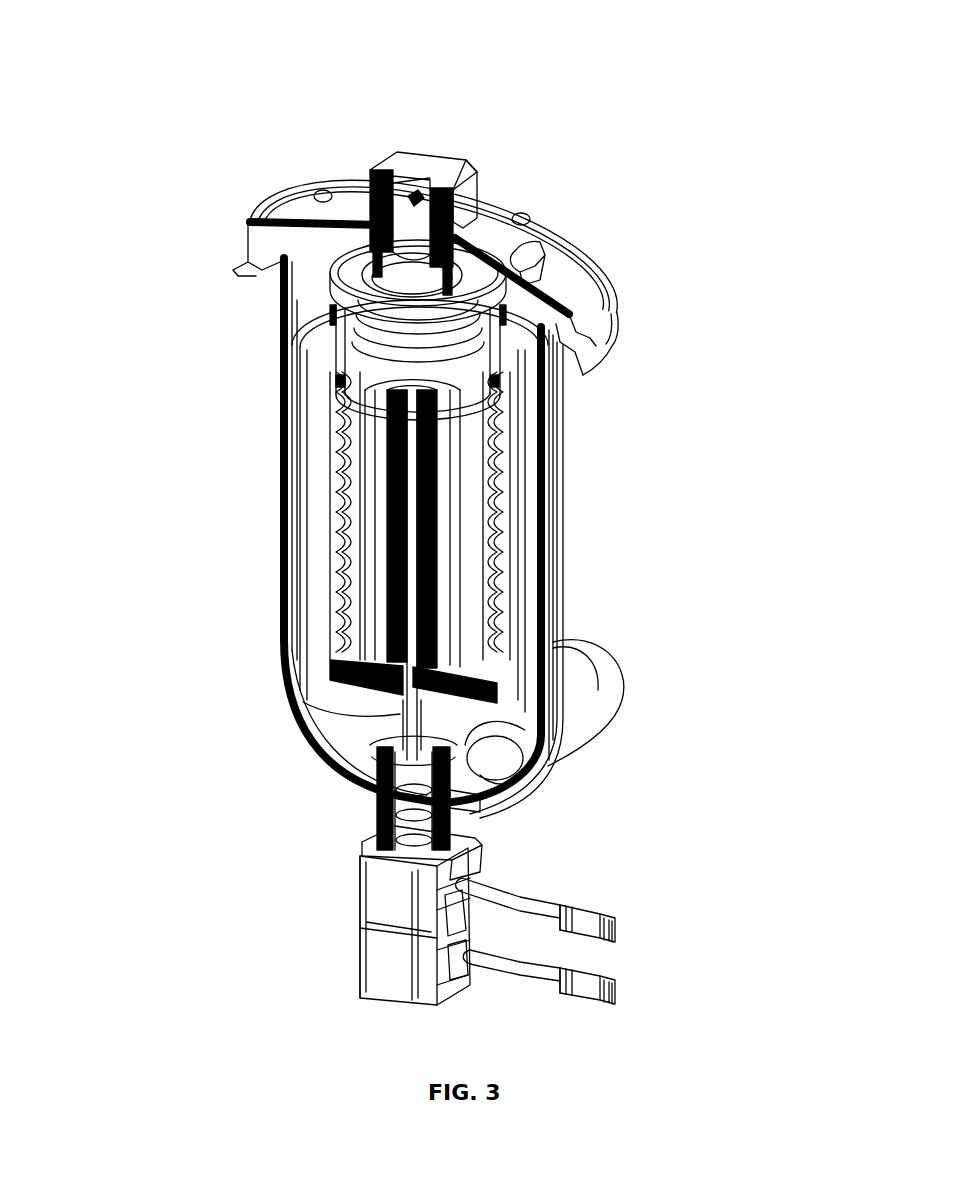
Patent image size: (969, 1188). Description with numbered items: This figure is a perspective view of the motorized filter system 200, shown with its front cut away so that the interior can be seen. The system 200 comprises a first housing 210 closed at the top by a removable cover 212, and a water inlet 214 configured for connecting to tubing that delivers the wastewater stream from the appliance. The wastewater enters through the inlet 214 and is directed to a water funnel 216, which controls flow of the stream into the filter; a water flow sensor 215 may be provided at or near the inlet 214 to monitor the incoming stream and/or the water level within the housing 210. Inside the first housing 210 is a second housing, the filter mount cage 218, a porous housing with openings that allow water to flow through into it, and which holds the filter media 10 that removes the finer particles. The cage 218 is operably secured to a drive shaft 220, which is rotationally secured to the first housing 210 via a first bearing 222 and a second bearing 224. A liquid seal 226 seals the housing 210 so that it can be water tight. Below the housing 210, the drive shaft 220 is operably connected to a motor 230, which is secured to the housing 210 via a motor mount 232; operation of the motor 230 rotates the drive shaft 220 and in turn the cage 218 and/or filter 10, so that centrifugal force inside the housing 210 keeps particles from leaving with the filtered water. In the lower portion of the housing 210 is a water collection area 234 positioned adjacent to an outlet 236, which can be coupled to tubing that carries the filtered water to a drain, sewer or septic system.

The motorized filter system 200 is at (122, 224).
The removable cover 212 is at (488, 212).
The water inlet 214 is at (382, 160).
The water flow sensor 215 is at (477, 183).
The water funnel 216 is at (480, 300).
The first housing 210 is at (548, 478).
The first bearing 222 is at (375, 372).
The filter media 10 is at (325, 507).
The filter mount cage 218 is at (332, 627).
The drive shaft 220 is at (403, 722).
The outlet 236 is at (578, 697).
The liquid seal 226 is at (378, 805).
The motor mount 232 is at (393, 787).
The second bearing 224 is at (465, 843).
The motor 230 is at (387, 927).
The water collection area 234 is at (530, 790).